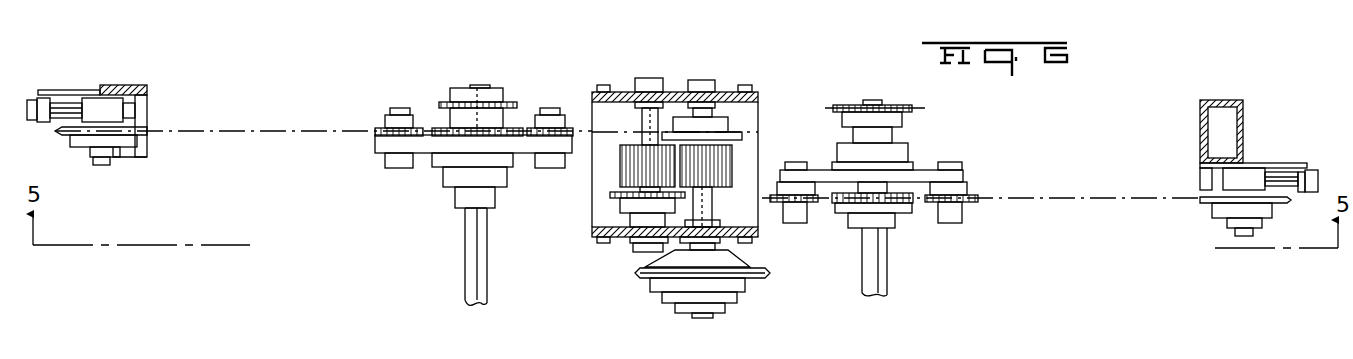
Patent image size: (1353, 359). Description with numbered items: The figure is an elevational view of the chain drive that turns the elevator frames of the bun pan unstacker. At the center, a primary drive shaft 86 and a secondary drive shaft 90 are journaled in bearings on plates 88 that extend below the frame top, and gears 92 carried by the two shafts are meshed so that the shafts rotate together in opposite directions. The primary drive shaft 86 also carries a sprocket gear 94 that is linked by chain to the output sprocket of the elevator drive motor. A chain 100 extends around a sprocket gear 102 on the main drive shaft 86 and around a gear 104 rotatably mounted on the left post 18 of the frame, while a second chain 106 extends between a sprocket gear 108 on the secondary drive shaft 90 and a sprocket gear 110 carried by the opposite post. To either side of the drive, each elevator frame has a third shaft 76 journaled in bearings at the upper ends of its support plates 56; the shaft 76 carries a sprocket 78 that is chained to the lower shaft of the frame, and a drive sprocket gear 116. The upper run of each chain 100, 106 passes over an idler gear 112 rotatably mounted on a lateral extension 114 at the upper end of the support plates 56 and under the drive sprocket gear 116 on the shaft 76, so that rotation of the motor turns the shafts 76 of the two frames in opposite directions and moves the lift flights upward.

The left post 18 is at (147, 95).
The support plates 56 is at (465, 153).
The third shaft 76 is at (472, 282).
The sprocket 78 is at (442, 102).
The primary drive shaft 86 is at (707, 208).
The plates 88 is at (748, 97).
The secondary drive shaft 90 is at (645, 125).
The gears 92 is at (690, 163).
The sprocket gear 94 is at (638, 278).
The chain 100 is at (220, 131).
The sprocket gear 102 is at (740, 134).
The gear 104 is at (55, 132).
The chain 106 is at (1075, 198).
The sprocket gear 108 is at (622, 196).
The sprocket gear 110 is at (1205, 203).
The idler gear 112 is at (578, 128).
The lateral extensions 114 is at (413, 157).
The drive sprocket gear 116 is at (435, 128).